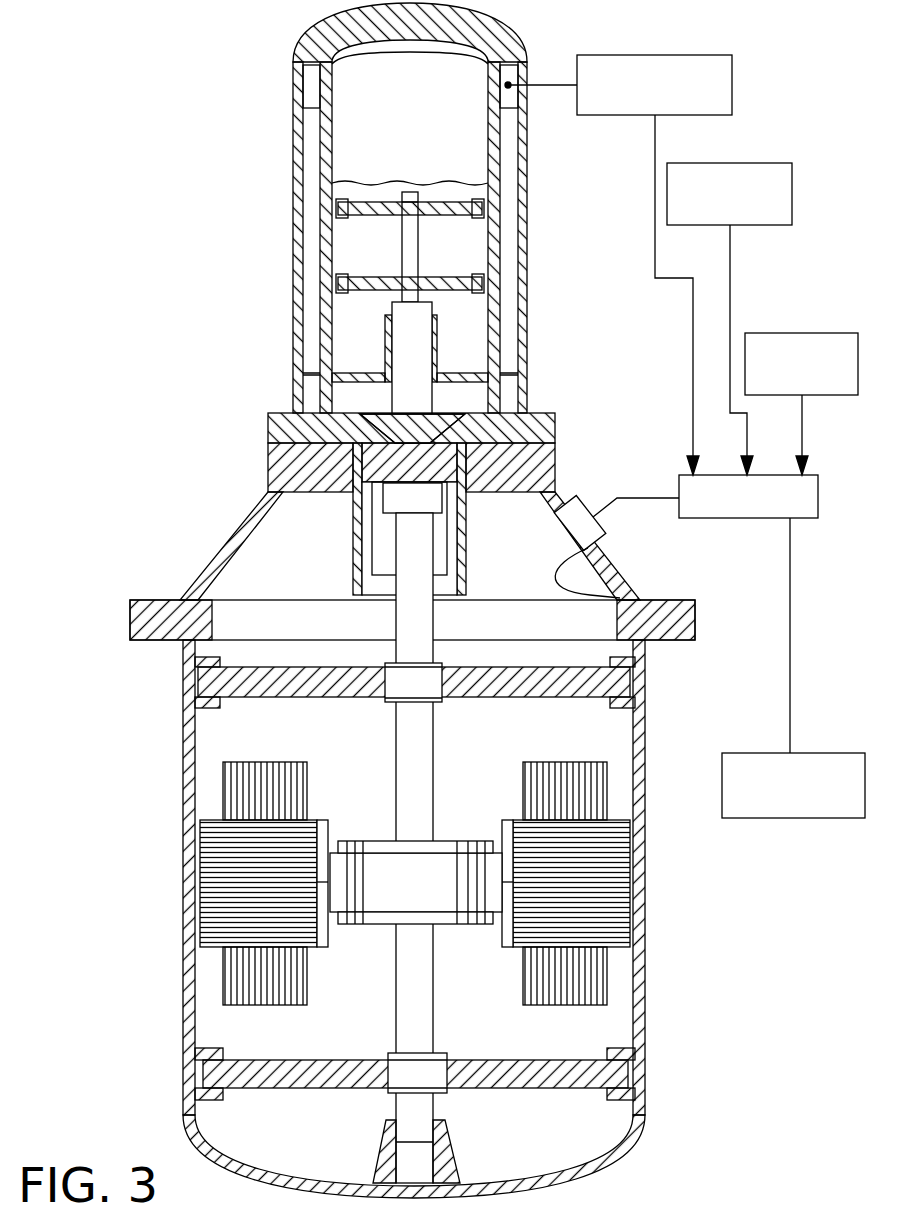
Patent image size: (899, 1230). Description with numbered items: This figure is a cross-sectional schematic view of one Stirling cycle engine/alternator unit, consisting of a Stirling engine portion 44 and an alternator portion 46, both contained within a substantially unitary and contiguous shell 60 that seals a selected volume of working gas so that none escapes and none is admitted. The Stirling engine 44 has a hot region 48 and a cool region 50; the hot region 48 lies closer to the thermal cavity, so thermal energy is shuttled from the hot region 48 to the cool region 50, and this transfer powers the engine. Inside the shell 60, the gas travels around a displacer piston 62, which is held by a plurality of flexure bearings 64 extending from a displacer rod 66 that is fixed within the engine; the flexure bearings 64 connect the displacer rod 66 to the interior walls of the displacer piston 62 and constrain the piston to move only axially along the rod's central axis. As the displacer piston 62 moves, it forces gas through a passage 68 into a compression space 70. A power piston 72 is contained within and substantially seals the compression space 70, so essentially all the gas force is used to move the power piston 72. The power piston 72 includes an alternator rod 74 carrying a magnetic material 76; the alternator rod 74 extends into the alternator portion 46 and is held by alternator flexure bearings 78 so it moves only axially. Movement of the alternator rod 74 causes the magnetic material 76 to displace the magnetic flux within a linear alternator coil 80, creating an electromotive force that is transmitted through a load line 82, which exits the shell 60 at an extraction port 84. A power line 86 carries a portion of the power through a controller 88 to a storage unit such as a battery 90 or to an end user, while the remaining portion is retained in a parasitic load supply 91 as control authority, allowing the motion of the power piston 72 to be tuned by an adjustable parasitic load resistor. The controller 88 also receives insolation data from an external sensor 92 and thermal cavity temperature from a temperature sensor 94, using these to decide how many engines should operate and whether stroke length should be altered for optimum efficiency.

The Stirling engine portion 44 is at (572, 323).
The alternator portion 46 is at (140, 981).
The hot region 48 is at (308, 90).
The cool region 50 is at (305, 383).
The shell 60 is at (396, 22).
The displacer piston 62 is at (410, 112).
The flexure bearings 64 is at (392, 276).
The displacer rod 66 is at (417, 340).
The passage 68 is at (352, 398).
The compression space 70 is at (500, 446).
The power piston 72 is at (365, 538).
The alternator rod 74 is at (448, 1147).
The magnetic material 76 is at (447, 925).
The alternator flexure bearings 78 is at (497, 700).
The linear alternator coil 80 is at (330, 837).
The load line 82 is at (638, 727).
The extraction port 84 is at (580, 504).
The power line 86 is at (662, 500).
The controller 88 is at (748, 519).
The battery 90 is at (762, 819).
The parasitic load supply 91 is at (773, 333).
The external sensor 92 is at (731, 163).
The temperature sensor 94 is at (633, 55).